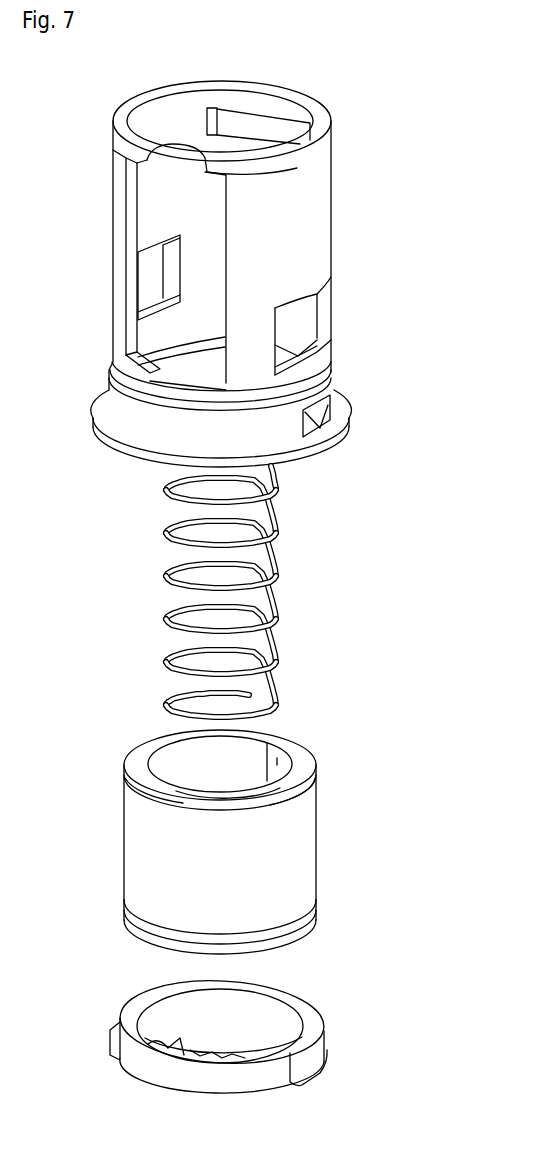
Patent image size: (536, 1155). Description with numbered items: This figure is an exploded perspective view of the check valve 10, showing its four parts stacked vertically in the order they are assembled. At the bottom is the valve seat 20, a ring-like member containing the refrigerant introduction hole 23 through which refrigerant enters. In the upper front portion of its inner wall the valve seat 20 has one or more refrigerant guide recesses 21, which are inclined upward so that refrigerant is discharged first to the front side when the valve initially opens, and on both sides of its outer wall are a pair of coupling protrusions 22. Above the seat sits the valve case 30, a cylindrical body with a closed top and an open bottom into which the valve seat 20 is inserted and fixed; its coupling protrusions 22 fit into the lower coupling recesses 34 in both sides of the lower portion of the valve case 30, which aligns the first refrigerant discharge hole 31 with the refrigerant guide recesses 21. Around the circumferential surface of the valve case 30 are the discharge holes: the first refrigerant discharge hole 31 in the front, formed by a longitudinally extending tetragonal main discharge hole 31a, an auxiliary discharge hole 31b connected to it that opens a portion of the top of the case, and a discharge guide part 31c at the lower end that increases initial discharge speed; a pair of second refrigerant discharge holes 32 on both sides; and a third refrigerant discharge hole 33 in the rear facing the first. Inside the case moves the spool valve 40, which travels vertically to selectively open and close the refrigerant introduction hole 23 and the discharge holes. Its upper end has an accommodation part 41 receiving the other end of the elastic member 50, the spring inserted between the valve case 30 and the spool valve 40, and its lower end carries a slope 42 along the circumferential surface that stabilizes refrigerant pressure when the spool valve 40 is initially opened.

The check valve 10 is at (358, 204).
The valve seat 20 is at (303, 994).
The refrigerant guide recesses 21 is at (180, 1040).
The coupling protrusions 22 is at (315, 1055).
The refrigerant introduction hole 23 is at (158, 1012).
The valve case 30 is at (163, 110).
The first refrigerant discharge hole 31 is at (187, 253).
The main discharge hole 31a is at (120, 180).
The auxiliary discharge hole 31b is at (113, 123).
The discharge guide part 31c is at (135, 372).
The second refrigerant discharge holes 32 is at (312, 315).
The third refrigerant discharge hole 33 is at (278, 126).
The lower coupling recesses 34 is at (318, 422).
The spool valve 40 is at (318, 835).
The accommodation part 41 is at (277, 740).
The slope 42 is at (307, 933).
The elastic member 50 is at (283, 606).